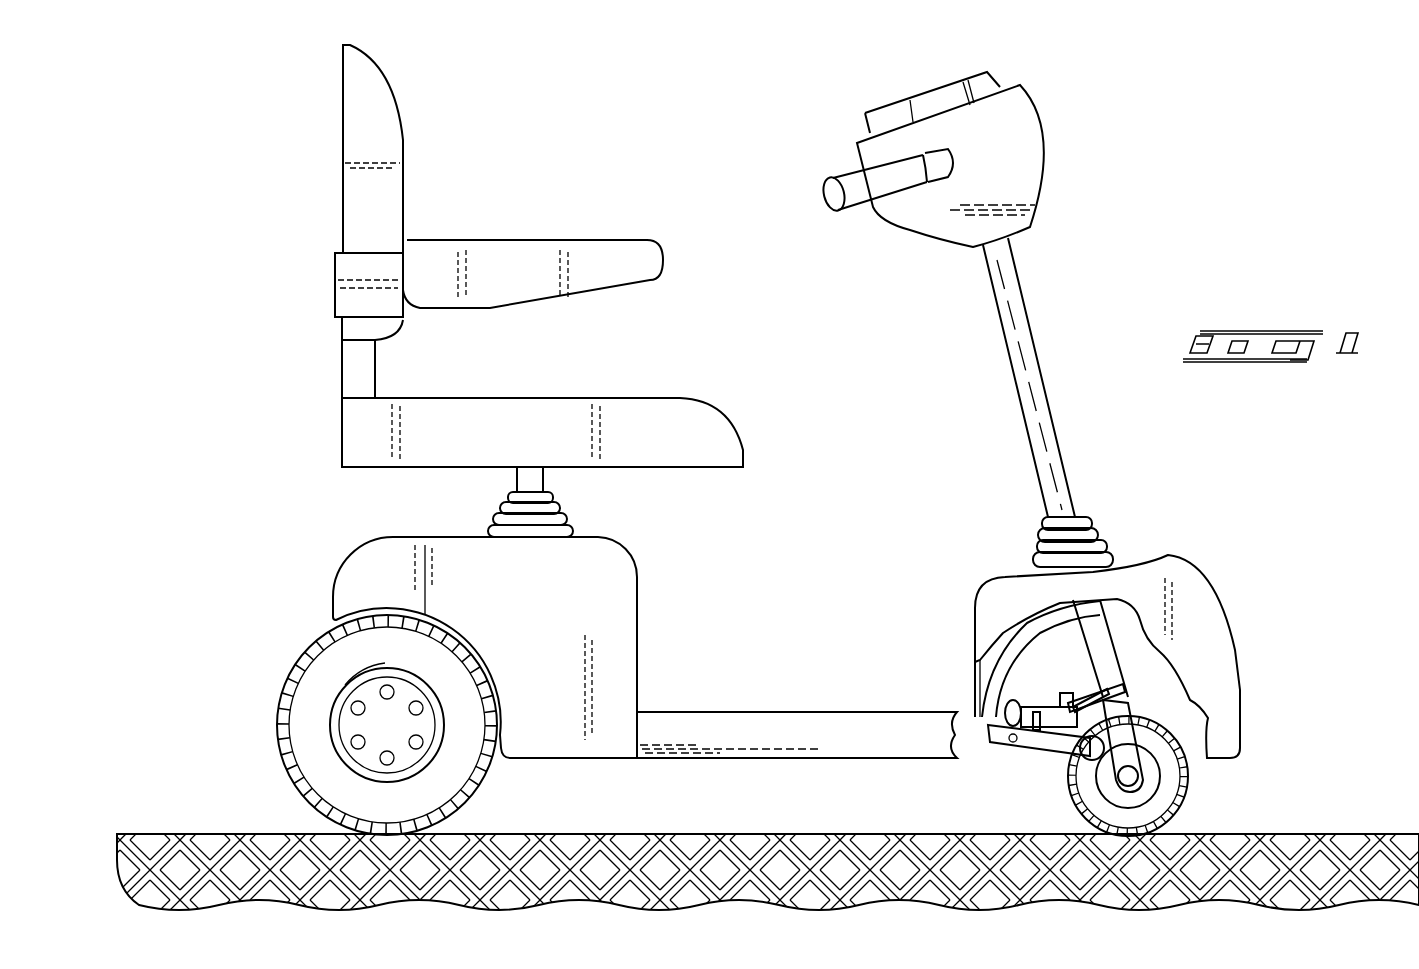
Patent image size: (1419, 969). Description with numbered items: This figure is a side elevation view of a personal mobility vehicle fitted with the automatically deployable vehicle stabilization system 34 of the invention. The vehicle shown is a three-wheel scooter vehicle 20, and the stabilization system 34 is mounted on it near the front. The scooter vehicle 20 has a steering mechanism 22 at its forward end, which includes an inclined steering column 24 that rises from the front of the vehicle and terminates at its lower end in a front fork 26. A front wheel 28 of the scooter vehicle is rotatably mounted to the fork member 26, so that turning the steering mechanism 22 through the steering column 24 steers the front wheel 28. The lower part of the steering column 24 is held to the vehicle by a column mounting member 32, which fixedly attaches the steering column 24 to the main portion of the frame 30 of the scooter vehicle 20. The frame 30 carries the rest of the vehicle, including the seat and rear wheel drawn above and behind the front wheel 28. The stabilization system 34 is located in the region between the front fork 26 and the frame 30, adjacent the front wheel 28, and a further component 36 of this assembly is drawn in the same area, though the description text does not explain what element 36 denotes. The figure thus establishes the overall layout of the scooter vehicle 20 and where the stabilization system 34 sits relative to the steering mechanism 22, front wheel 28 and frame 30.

The three-wheel scooter vehicle 20 is at (640, 130).
The steering mechanism 22 is at (1068, 136).
The steering column 24 is at (1030, 383).
The front fork 26 is at (1117, 720).
The front wheel 28 is at (1170, 777).
The frame 30 is at (977, 762).
The column mounting member 32 is at (1000, 683).
The automatically deployable vehicle stabilization system 34 is at (1047, 785).
The suspension arm 36 is at (1033, 747).